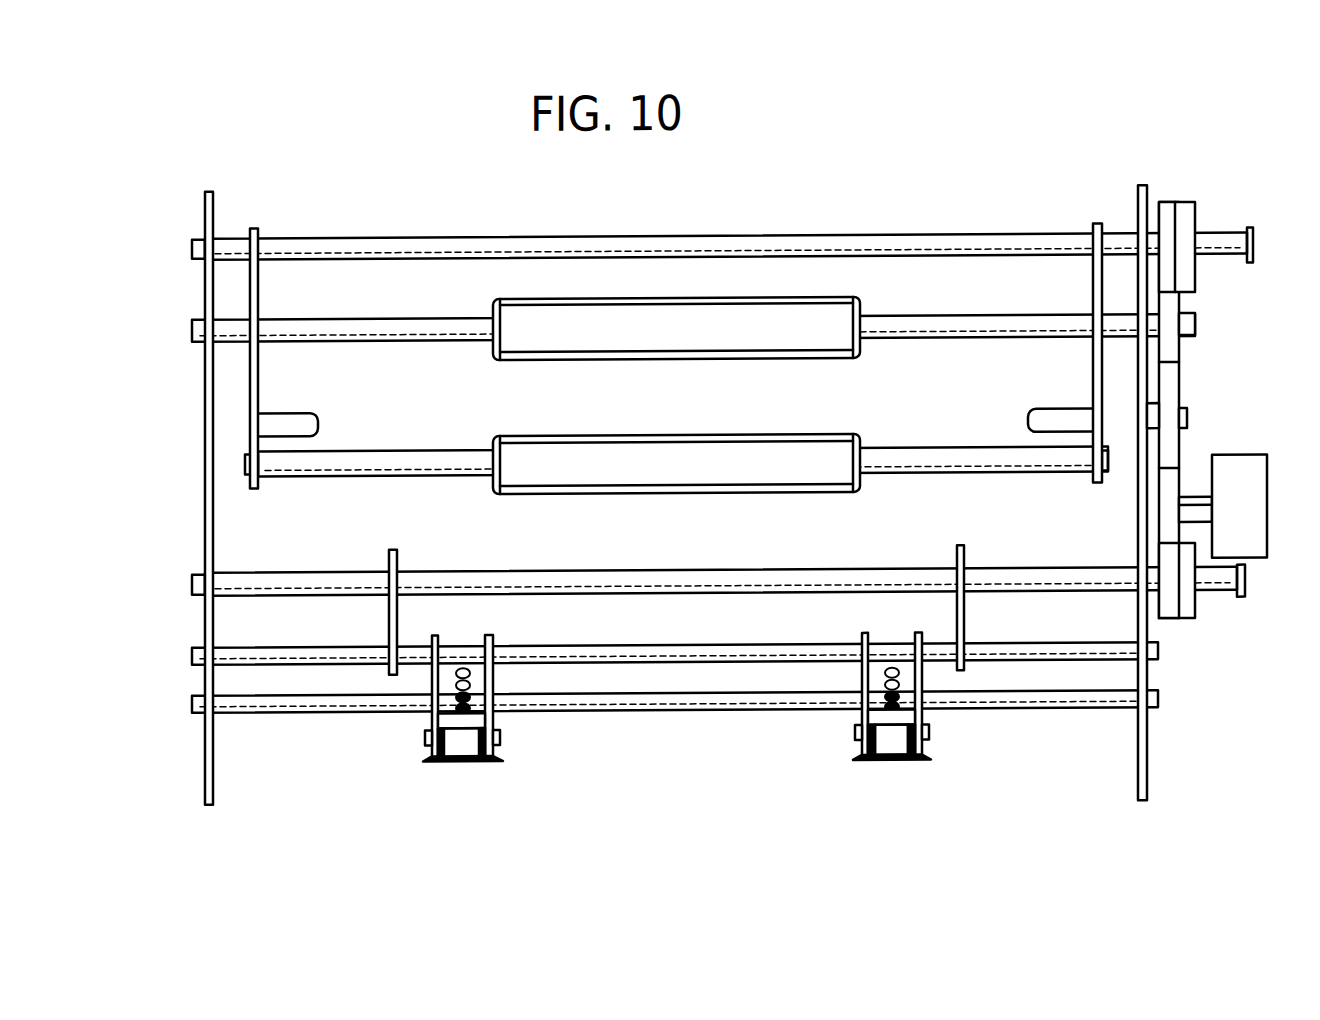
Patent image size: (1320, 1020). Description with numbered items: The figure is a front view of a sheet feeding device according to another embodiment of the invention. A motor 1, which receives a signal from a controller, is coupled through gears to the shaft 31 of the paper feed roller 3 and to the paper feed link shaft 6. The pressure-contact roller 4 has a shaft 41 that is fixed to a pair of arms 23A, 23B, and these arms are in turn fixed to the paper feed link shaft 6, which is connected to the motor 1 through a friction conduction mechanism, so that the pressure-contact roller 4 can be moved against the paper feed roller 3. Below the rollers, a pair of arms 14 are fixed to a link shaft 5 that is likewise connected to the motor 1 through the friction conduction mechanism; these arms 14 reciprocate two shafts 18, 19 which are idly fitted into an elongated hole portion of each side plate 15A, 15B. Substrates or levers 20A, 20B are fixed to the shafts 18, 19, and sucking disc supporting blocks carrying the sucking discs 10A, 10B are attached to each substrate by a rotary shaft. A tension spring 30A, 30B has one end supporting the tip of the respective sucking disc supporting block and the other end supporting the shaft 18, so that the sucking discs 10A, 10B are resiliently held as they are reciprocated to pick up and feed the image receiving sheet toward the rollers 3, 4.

The motor 1 is at (1242, 462).
The paper feed roller 3 is at (494, 364).
The pressure-contact roller 4 is at (494, 498).
The link shaft 5 is at (299, 575).
The paper feed link shaft 6 is at (377, 241).
The sucking disc 10A is at (895, 766).
The sucking disc 10B is at (463, 766).
The arms 14 is at (390, 556).
The side plate 15A is at (1138, 210).
The side plate 15B is at (205, 221).
The shaft 18 is at (665, 649).
The shaft 19 is at (660, 716).
The substrate 20A is at (862, 643).
The substrate 20B is at (492, 643).
The arm 23A is at (1093, 358).
The arm 23B is at (258, 364).
The tension spring 30A is at (896, 672).
The tension spring 30B is at (456, 670).
The shaft 31 is at (900, 348).
The shaft 41 is at (957, 453).